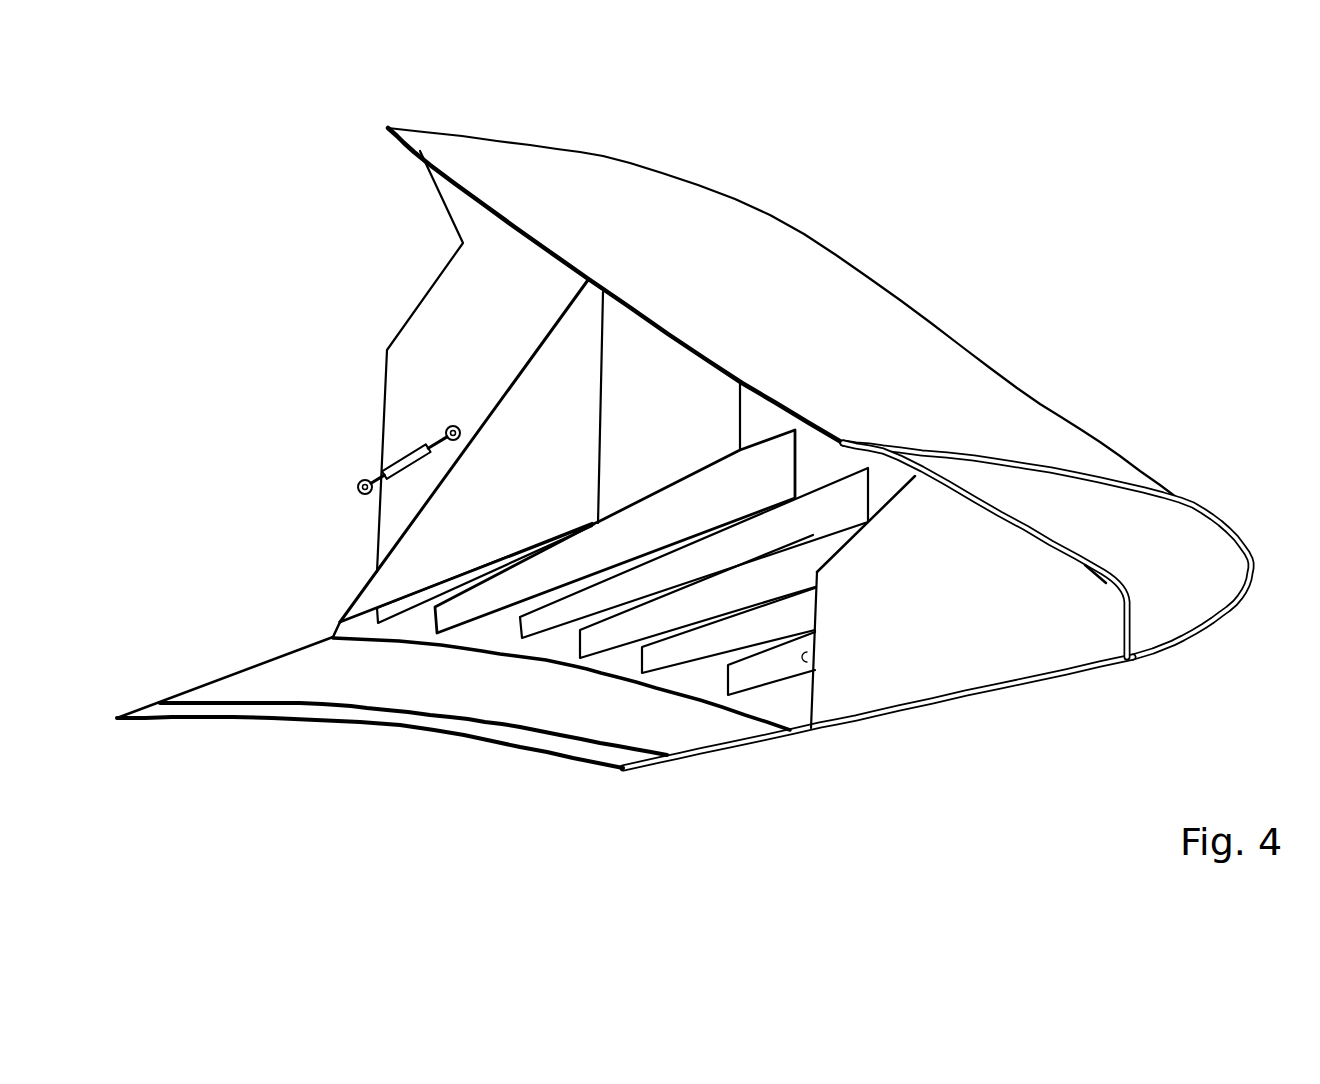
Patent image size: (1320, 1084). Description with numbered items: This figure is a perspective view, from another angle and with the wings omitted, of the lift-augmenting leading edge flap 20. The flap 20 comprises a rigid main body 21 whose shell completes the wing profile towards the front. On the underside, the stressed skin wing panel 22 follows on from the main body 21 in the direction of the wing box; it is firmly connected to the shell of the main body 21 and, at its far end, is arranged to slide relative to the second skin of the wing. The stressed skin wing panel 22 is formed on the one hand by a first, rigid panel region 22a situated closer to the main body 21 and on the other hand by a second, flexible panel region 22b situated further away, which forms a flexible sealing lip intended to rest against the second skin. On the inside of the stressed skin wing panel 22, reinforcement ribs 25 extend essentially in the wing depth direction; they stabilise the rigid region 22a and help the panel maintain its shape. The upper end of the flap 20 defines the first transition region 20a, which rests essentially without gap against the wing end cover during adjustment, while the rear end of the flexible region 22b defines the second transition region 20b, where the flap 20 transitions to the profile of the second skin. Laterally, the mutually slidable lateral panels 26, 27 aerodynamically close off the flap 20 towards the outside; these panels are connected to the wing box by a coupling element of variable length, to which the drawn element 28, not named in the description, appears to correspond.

The leading edge flap 20 is at (1072, 296).
The first transition region 20a is at (675, 318).
The second transition region 20b is at (690, 792).
The main body 21 is at (1150, 528).
The stressed skin wing panel 22 is at (858, 750).
The rigid panel region 22a is at (535, 695).
The flexible panel region 22b is at (403, 725).
The reinforcement ribs 25 is at (567, 560).
The lateral panel 26 is at (570, 360).
The lateral panel 27 is at (432, 388).
The turnbuckle strut 28 is at (418, 455).